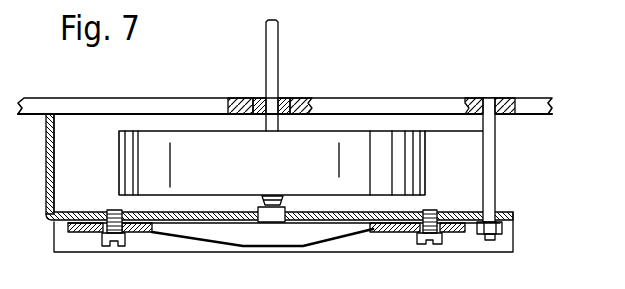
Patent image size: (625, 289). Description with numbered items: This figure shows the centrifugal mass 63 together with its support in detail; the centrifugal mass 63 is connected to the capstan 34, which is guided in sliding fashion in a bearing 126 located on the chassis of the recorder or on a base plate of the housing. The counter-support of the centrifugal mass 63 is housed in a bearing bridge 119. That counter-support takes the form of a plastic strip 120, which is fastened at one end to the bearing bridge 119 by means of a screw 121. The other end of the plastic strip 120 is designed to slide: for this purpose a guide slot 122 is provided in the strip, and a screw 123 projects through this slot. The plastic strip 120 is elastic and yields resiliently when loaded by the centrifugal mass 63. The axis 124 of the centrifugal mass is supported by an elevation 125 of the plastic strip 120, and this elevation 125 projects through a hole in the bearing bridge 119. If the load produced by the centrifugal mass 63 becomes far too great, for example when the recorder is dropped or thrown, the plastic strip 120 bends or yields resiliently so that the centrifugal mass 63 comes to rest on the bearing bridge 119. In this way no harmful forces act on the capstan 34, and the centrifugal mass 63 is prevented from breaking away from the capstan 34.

The capstan 34 is at (270, 38).
The bearing 126 is at (286, 98).
The centrifugal mass 63 is at (408, 133).
The axis 124 is at (268, 196).
The elevation 125 is at (273, 217).
The bearing bridge 119 is at (508, 212).
The plastic strip 120 is at (218, 236).
The screw 121 is at (104, 248).
The guide slot 122 is at (413, 232).
The screw 123 is at (440, 244).